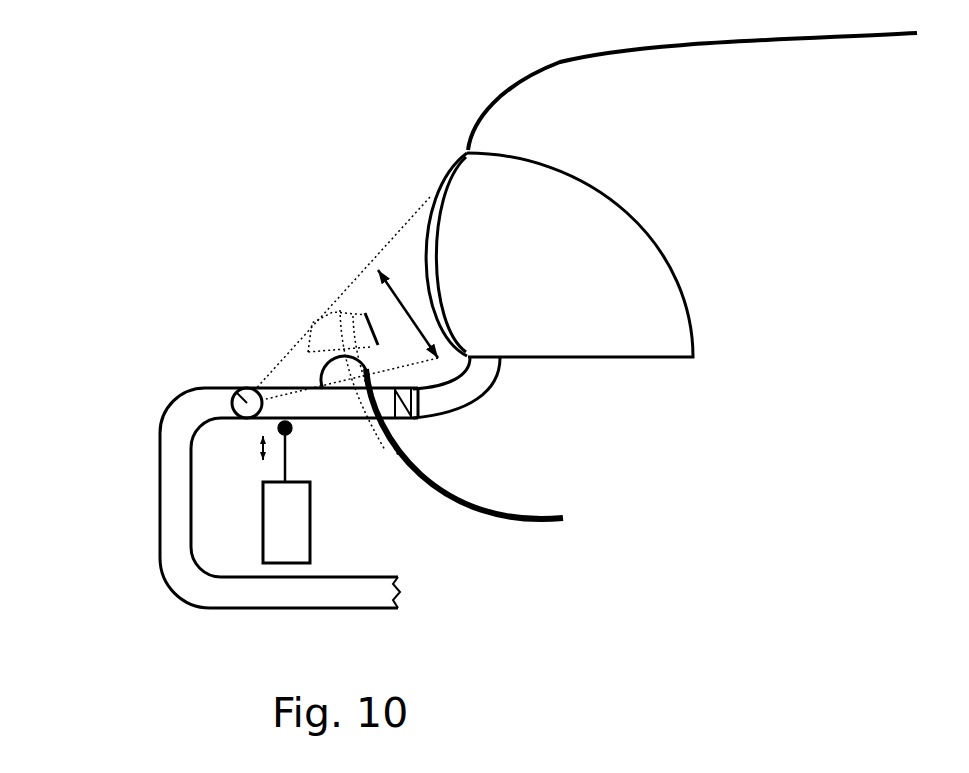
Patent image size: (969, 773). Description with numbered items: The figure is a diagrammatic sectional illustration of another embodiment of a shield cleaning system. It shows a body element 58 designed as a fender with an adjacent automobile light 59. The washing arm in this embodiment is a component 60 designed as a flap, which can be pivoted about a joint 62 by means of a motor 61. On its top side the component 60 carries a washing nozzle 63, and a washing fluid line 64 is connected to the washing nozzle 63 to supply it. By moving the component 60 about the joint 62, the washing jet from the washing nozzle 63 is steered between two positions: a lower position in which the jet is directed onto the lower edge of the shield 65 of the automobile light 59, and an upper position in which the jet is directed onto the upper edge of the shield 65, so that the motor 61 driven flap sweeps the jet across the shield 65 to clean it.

The body element 58 is at (145, 492).
The automobile light 59 is at (437, 163).
The component 60 is at (308, 405).
The motor 61 is at (278, 520).
The joint 62 is at (240, 390).
The washing nozzle 63 is at (423, 418).
The washing fluid line 64 is at (442, 492).
The shield 65 is at (433, 195).